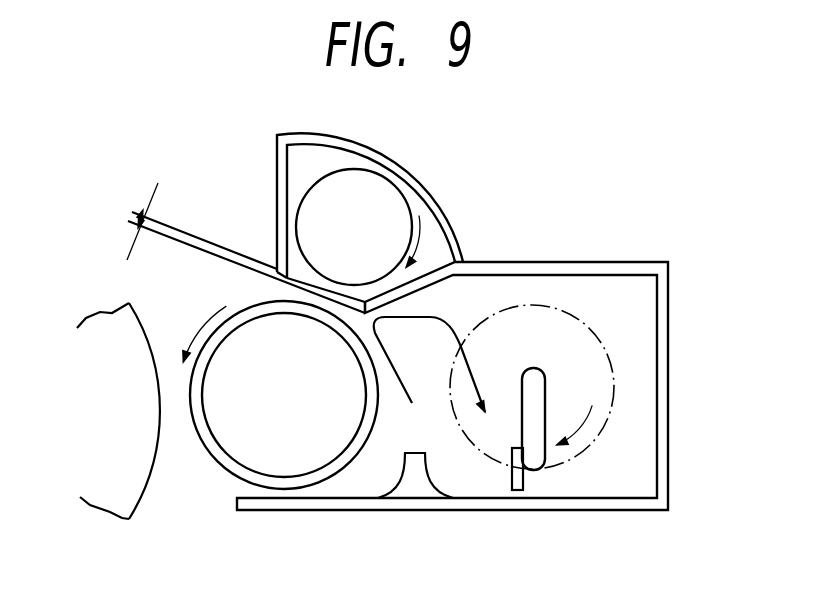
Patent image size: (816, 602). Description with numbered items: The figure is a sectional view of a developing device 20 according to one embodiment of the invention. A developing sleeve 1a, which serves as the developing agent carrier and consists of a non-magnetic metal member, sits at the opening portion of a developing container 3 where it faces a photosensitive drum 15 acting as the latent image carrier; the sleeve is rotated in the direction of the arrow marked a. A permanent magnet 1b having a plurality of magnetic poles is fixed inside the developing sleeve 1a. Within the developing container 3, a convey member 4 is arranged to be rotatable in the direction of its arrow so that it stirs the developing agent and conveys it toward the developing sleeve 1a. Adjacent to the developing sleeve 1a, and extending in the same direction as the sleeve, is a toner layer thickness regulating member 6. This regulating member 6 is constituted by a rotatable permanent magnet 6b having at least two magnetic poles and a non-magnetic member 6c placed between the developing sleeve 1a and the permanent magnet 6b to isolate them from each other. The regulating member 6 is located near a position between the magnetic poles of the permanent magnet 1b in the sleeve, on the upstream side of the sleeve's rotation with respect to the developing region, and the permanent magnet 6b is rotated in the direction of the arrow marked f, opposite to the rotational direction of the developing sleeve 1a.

The developing sleeve 1a is at (207, 447).
The permanent magnet 1b is at (232, 472).
The developing container 3 is at (668, 338).
The convey member 4 is at (537, 402).
The toner layer thickness regulating member 6 is at (325, 209).
The permanent magnet 6b is at (308, 190).
The non-magnetic member 6c is at (304, 252).
The photosensitive drum 15 is at (150, 493).
The developing device 20 is at (430, 335).